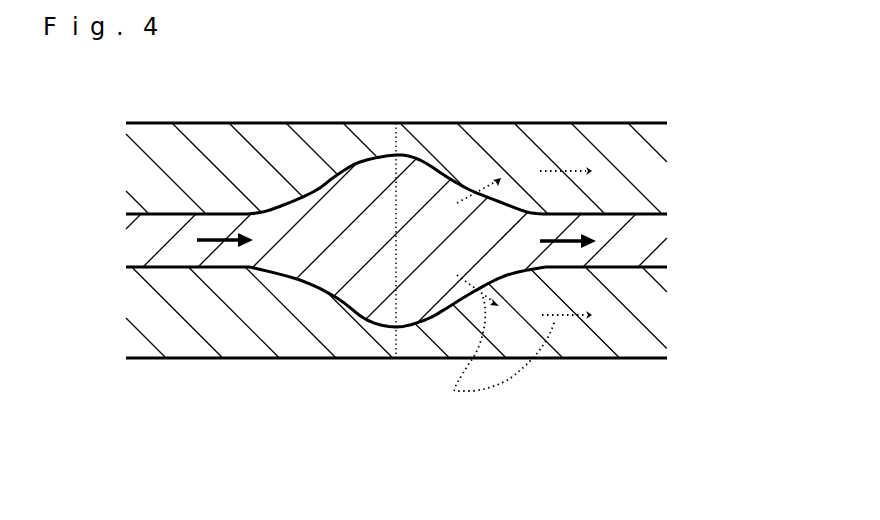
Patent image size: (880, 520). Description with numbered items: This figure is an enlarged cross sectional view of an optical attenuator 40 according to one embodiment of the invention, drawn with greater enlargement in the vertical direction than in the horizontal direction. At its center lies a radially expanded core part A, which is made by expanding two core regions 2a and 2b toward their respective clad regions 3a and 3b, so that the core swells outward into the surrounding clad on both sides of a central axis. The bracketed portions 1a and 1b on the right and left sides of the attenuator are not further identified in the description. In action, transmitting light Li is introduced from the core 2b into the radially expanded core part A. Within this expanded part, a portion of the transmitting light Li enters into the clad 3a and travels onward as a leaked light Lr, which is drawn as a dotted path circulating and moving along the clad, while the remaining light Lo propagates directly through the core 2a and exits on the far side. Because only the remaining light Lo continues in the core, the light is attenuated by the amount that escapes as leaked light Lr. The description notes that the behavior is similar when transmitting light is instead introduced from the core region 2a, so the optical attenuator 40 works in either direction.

The outlet-side body portion 1a is at (713, 373).
The inlet-side body portion 1b is at (96, 373).
The core region 2a is at (612, 262).
The core region 2b is at (177, 255).
The clad region 3a is at (562, 127).
The clad region 3b is at (215, 124).
The optical attenuator 40 is at (428, 433).
The radially expanded core part A is at (532, 105).
The transmitting light Li is at (227, 235).
The remaining light Lo is at (572, 242).
The leaked light Lr is at (497, 285).